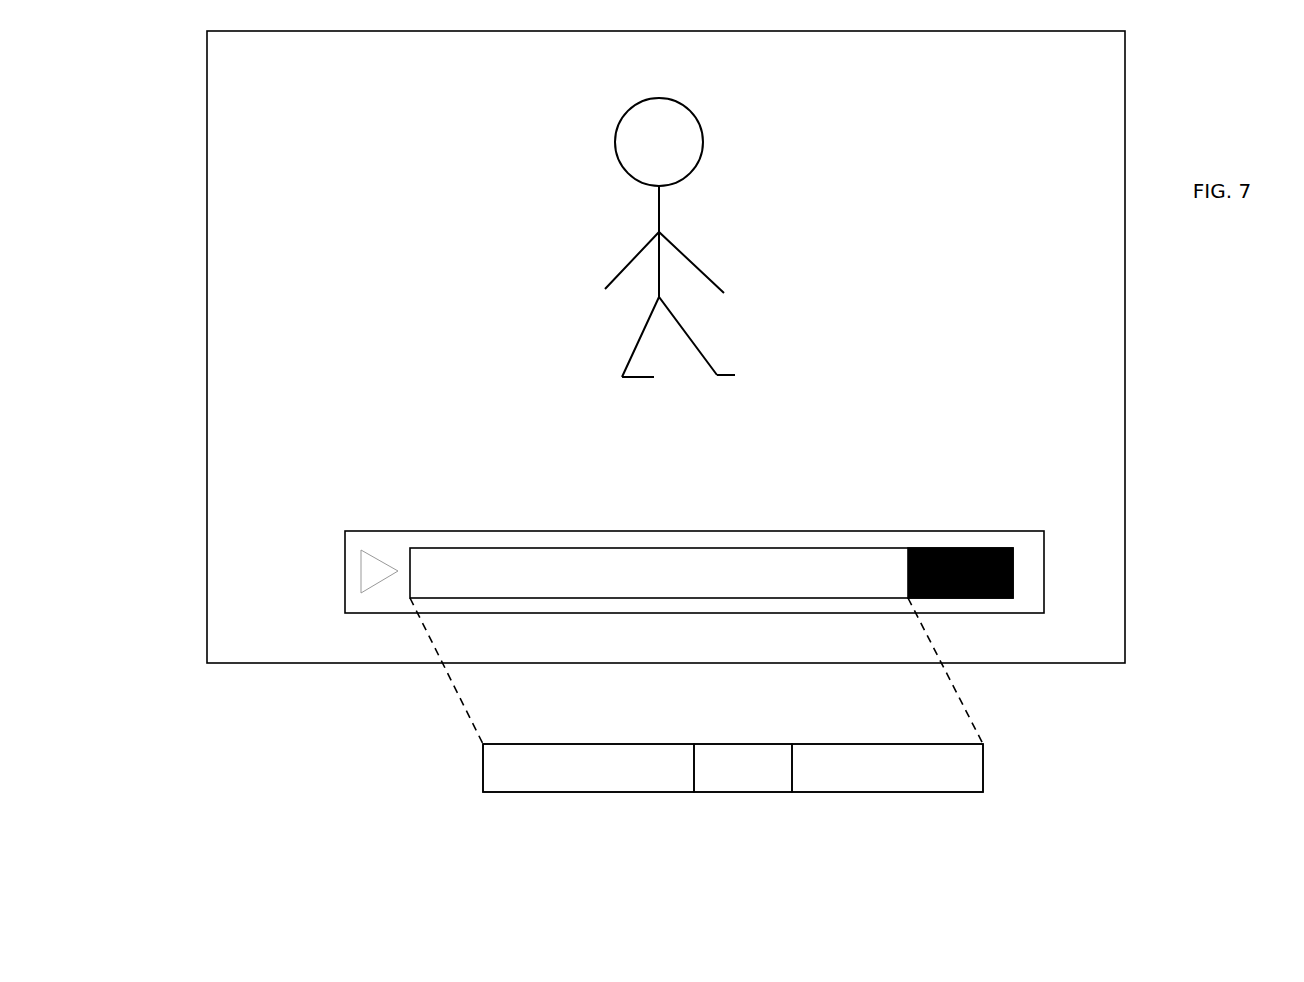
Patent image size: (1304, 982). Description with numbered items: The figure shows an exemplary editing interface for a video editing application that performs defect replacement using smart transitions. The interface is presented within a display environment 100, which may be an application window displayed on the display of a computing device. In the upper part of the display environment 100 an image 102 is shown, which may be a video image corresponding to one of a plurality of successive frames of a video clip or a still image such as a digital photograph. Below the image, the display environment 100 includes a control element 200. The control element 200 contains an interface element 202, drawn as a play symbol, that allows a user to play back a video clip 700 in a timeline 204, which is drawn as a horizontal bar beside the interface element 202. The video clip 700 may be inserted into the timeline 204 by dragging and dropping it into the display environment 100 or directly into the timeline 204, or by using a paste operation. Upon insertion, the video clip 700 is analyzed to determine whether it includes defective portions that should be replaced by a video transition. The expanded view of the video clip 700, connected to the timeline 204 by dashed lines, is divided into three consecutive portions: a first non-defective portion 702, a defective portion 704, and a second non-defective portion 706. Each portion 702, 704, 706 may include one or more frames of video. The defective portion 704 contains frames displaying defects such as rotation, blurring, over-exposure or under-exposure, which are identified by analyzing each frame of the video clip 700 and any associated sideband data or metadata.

The display environment 100 is at (195, 112).
The image 102 is at (541, 189).
The control element 200 is at (430, 516).
The interface element 202 is at (345, 569).
The timeline 204 is at (1030, 569).
The video clip 700 is at (688, 818).
The non-defective portion 702 is at (588, 768).
The defective portion 704 is at (743, 768).
The non-defective portion 706 is at (887, 768).